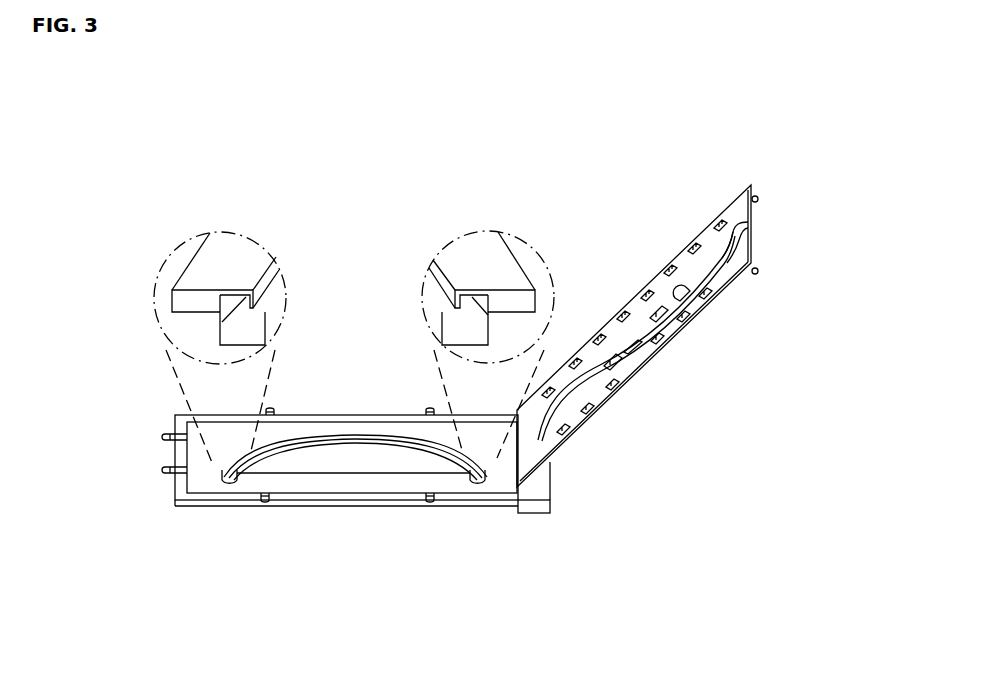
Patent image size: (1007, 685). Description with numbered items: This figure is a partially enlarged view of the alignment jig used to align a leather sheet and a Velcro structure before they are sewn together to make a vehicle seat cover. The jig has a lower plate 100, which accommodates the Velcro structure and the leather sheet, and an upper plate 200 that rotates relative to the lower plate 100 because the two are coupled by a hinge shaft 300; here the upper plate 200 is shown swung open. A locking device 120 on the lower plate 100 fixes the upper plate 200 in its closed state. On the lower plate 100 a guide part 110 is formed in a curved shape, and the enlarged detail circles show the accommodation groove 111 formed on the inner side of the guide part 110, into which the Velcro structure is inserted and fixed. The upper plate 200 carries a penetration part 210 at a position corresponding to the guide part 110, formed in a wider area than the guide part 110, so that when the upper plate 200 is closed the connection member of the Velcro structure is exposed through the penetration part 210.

The lower plate 100 is at (172, 507).
The guide part 110 is at (224, 256).
The accommodation groove 111 is at (240, 302).
The locking device 120 is at (427, 500).
The upper plate 200 is at (731, 201).
The penetration part 210 is at (728, 248).
The hinge shaft 300 is at (533, 483).